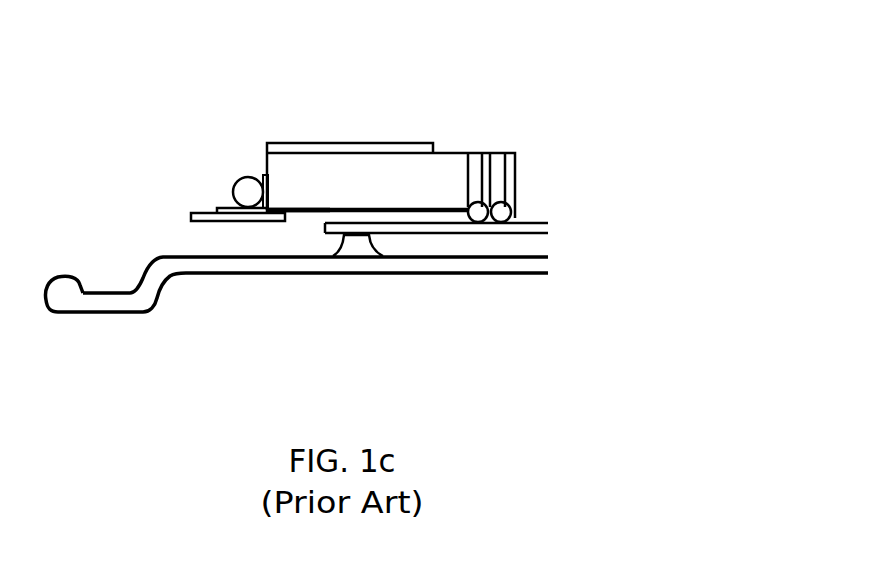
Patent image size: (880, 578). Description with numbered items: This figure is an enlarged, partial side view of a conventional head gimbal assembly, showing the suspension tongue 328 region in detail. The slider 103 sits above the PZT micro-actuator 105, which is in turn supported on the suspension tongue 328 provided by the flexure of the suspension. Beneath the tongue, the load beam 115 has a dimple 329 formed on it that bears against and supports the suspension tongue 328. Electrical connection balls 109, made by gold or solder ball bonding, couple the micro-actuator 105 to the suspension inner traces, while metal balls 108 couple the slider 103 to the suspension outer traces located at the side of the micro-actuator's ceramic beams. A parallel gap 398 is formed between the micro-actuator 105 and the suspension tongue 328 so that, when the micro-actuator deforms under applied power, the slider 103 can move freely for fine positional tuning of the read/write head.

The slider 103 is at (347, 143).
The PZT micro-actuator 105 is at (428, 190).
The metal balls 108 is at (242, 177).
The electrical connection balls 109 is at (488, 220).
The load beam 115 is at (152, 283).
The suspension tongue 328 is at (422, 223).
The dimple 329 is at (355, 247).
The parallel gap 398 is at (330, 213).